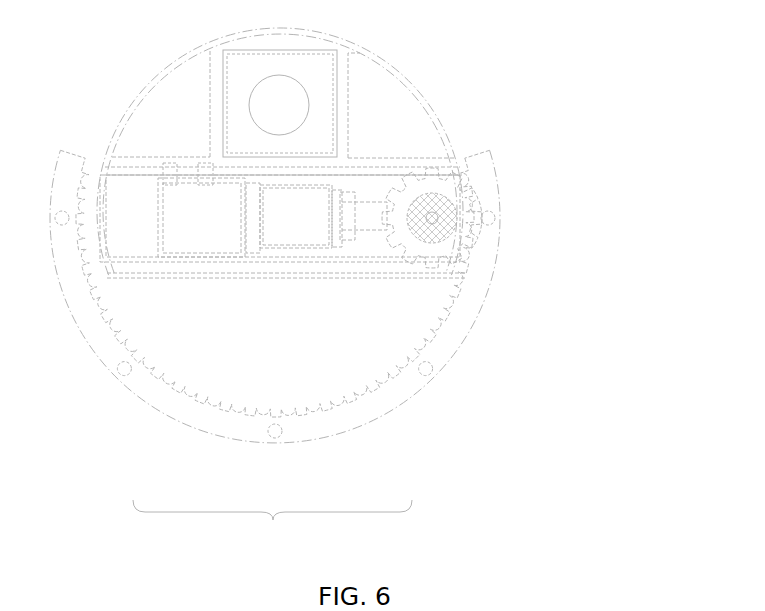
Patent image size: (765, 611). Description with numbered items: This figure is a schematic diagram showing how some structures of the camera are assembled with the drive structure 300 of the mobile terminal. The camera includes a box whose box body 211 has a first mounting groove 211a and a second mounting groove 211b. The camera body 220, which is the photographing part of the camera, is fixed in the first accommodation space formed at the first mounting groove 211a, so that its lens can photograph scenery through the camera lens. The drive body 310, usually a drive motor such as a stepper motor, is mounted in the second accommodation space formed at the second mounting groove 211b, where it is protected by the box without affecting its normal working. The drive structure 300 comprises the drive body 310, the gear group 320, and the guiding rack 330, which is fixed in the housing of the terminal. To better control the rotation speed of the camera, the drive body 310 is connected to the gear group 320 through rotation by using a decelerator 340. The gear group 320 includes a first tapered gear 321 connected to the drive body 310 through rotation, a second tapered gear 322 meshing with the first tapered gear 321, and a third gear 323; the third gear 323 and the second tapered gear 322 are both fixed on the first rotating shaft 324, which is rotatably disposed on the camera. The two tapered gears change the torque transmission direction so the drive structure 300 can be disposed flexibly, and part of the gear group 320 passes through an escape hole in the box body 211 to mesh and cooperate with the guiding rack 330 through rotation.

The box body 211 is at (407, 118).
The first mounting groove 211a is at (335, 87).
The second mounting groove 211b is at (128, 190).
The camera body 220 is at (278, 82).
The drive structure 300 is at (272, 523).
The drive body 310 is at (220, 233).
The decelerator 340 is at (313, 218).
The gear group 320 is at (492, 322).
The first tapered gear 321 is at (404, 207).
The second tapered gear 322 is at (438, 220).
The third gear 323 is at (462, 230).
The first rotating shaft 324 is at (428, 221).
The guiding rack 330 is at (422, 380).